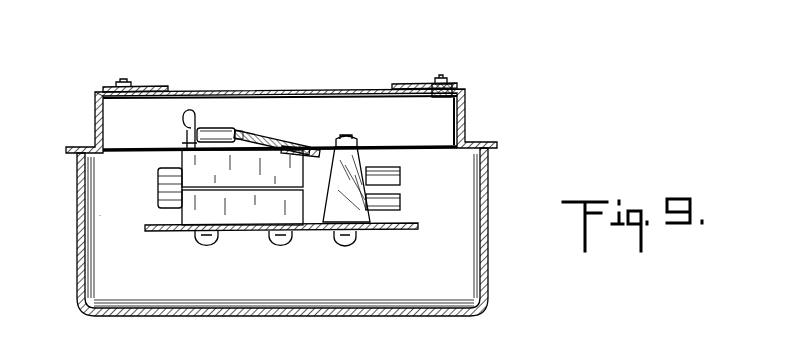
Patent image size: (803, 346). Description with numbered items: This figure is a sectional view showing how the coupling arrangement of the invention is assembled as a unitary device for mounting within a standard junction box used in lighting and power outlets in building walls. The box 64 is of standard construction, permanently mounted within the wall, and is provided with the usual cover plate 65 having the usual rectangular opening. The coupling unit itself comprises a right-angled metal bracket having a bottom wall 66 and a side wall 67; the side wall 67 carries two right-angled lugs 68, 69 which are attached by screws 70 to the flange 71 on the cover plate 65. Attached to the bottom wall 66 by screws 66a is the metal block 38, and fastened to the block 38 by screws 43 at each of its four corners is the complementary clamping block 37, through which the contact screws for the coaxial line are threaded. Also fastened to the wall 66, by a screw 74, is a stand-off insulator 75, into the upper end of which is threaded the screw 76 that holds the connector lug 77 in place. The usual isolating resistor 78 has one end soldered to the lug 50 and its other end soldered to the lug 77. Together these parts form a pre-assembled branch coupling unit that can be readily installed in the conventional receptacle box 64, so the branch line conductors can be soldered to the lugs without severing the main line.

The complementary clamping block 37 is at (245, 200).
The metal block 38 is at (193, 212).
The screws 43 is at (185, 142).
The lug 50 is at (192, 132).
The box 64 is at (488, 268).
The cover plate 65 is at (478, 131).
The bottom wall 66 is at (386, 230).
The screws 66a is at (208, 240).
The side wall 67 is at (105, 208).
The right-angled lug 68 is at (100, 92).
The right-angled lug 69 is at (455, 86).
The screws 70 is at (125, 86).
The flange 71 is at (462, 91).
The screw 74 is at (342, 240).
The stand-off insulator 75 is at (364, 152).
The screw 76 is at (348, 136).
The connector lug 77 is at (316, 147).
The isolating resistor 78 is at (248, 132).